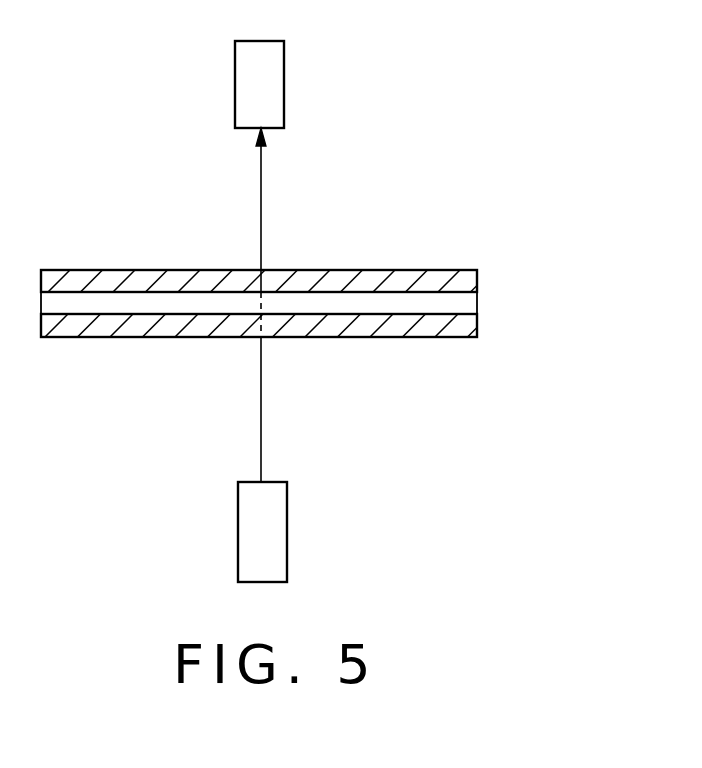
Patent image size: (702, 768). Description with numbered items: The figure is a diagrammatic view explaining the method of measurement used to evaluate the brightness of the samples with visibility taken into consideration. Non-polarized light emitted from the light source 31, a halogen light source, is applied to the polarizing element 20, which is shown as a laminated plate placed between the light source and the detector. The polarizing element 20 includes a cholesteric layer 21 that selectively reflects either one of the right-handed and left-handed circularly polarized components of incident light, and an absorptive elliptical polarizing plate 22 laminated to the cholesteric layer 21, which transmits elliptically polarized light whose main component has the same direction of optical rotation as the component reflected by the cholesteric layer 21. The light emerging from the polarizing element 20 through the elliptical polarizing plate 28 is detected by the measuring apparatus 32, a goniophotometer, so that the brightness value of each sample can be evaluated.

The polarizing element 20 is at (306, 287).
The cholesteric layer 21 is at (462, 303).
The absorptive elliptical polarizing plate 22 is at (278, 333).
The elliptical polarizing plate 28 is at (460, 282).
The light source 31 is at (273, 521).
The measuring apparatus 32 is at (270, 70).